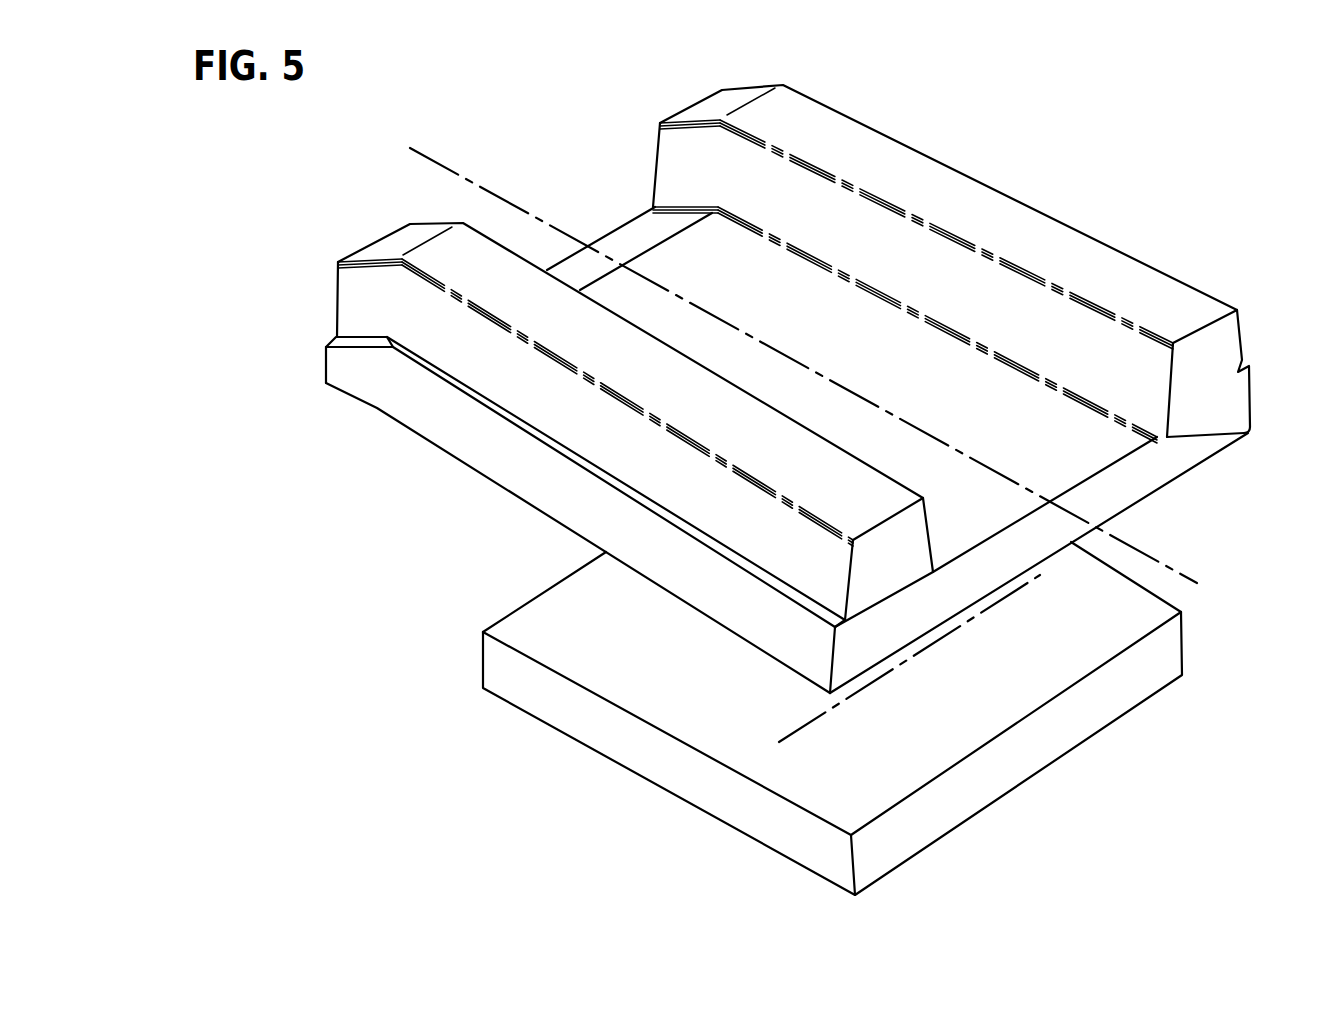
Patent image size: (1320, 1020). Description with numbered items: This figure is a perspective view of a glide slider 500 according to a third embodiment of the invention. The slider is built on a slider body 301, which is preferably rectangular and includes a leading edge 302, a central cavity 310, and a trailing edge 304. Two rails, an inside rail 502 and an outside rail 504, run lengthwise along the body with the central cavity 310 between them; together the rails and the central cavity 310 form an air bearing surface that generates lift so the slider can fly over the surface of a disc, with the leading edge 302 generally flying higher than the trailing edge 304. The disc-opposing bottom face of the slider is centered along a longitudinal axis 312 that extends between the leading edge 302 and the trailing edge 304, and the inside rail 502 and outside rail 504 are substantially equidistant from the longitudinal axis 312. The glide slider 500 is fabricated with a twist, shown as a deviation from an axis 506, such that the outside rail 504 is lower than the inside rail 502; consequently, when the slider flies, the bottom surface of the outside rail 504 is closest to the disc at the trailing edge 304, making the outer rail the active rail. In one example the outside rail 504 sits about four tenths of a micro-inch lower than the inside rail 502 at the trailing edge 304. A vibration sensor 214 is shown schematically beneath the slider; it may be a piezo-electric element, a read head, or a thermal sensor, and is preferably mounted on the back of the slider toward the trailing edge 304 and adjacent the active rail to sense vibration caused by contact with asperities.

The glide slider 500 is at (855, 119).
The slider body 301 is at (525, 503).
The leading edge 302 is at (613, 240).
The trailing edge 304 is at (1123, 464).
The central cavity 310 is at (828, 313).
The longitudinal axis 312 is at (1200, 578).
The inside rail 502 is at (1037, 247).
The outside rail 504 is at (527, 298).
The axis 506 is at (813, 720).
The vibration sensor 214 is at (1110, 642).